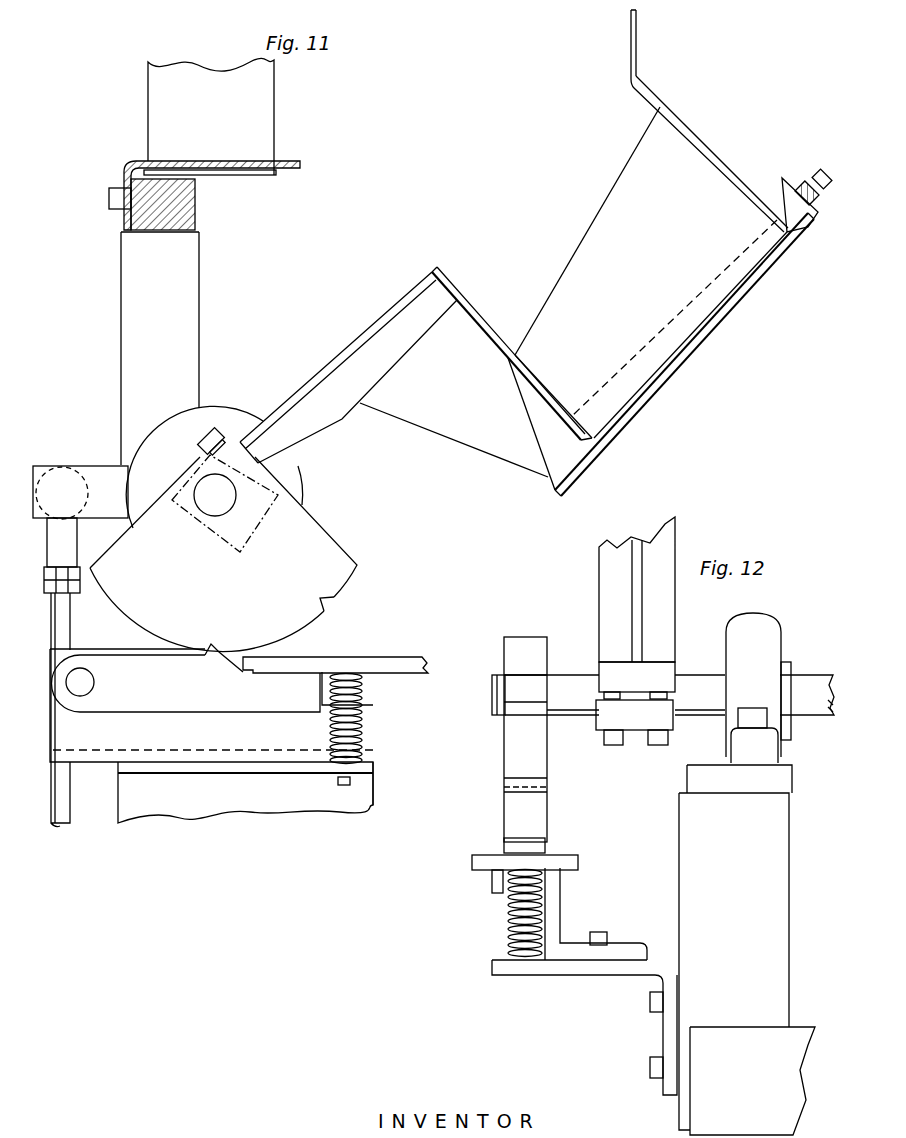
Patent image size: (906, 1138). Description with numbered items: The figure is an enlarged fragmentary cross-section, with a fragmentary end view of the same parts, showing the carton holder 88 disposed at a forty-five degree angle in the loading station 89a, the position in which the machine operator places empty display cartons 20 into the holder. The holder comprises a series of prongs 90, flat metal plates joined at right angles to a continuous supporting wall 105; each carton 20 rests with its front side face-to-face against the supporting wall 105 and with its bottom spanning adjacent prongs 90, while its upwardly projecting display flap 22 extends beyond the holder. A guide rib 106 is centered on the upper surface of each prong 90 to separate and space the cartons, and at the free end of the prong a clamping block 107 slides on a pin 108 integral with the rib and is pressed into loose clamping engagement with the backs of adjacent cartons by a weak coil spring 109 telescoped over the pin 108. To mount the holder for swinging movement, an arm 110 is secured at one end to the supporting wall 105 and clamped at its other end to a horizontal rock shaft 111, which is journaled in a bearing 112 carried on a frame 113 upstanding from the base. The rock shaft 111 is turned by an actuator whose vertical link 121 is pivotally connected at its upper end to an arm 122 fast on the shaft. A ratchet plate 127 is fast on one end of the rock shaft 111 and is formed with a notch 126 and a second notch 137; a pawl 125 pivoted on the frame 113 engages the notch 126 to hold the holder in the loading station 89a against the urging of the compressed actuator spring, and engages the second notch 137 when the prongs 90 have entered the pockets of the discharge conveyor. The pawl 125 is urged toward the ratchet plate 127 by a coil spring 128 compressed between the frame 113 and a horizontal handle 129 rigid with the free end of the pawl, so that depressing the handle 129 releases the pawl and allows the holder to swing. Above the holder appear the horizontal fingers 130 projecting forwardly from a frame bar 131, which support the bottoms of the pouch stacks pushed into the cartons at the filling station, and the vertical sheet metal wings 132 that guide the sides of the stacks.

In FIG. 11, the display carton 20 is at (604, 203).
In FIG. 11, the display flap 22 is at (638, 40).
In FIG. 11, the carton holder 88 is at (470, 446).
In FIG. 11, the loading station 89a is at (768, 305).
In FIG. 11, the prong 90 is at (710, 330).
In FIG. 11, the supporting wall 105 is at (486, 320).
In FIG. 11, the guide rib 106 is at (688, 298).
In FIG. 11, the clamping block 107 is at (782, 190).
In FIG. 11, the pin 108 is at (822, 172).
In FIG. 11, the coil spring 109 is at (800, 186).
In FIG. 11, the arm 110 is at (327, 364).
In FIG. 12, the arm 110 is at (676, 590).
In FIG. 11, the rock shaft 111 is at (204, 511).
In FIG. 12, the rock shaft 111 is at (588, 712).
In FIG. 11, the bearing 112 is at (218, 408).
In FIG. 12, the bearing 112 is at (782, 623).
In FIG. 11, the frame 113 is at (233, 795).
In FIG. 12, the frame 113 is at (687, 853).
In FIG. 11, the vertical link 121 is at (60, 826).
In FIG. 11, the arm 122 is at (97, 468).
In FIG. 11, the pawl 125 is at (240, 707).
In FIG. 11, the notch 126 is at (219, 652).
In FIG. 11, the ratchet plate 127 is at (303, 520).
In FIG. 12, the ratchet plate 127 is at (510, 750).
In FIG. 11, the coil spring 128 is at (364, 688).
In FIG. 12, the coil spring 128 is at (507, 920).
In FIG. 11, the handle 129 is at (374, 658).
In FIG. 12, the handle 129 is at (470, 875).
In FIG. 11, the finger 130 is at (285, 161).
In FIG. 11, the frame bar 131 is at (196, 203).
In FIG. 11, the wing 132 is at (276, 108).
In FIG. 11, the second notch 137 is at (331, 601).
In FIG. 12, the second notch 137 is at (508, 789).